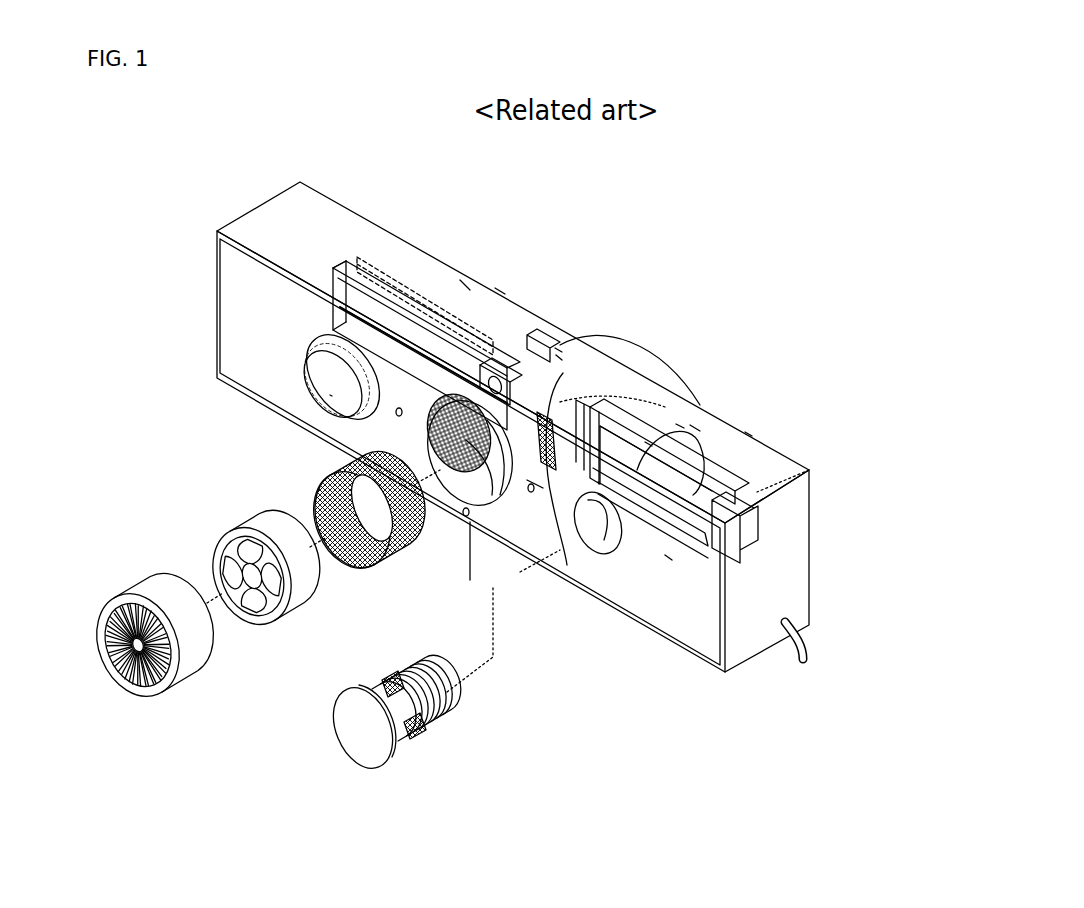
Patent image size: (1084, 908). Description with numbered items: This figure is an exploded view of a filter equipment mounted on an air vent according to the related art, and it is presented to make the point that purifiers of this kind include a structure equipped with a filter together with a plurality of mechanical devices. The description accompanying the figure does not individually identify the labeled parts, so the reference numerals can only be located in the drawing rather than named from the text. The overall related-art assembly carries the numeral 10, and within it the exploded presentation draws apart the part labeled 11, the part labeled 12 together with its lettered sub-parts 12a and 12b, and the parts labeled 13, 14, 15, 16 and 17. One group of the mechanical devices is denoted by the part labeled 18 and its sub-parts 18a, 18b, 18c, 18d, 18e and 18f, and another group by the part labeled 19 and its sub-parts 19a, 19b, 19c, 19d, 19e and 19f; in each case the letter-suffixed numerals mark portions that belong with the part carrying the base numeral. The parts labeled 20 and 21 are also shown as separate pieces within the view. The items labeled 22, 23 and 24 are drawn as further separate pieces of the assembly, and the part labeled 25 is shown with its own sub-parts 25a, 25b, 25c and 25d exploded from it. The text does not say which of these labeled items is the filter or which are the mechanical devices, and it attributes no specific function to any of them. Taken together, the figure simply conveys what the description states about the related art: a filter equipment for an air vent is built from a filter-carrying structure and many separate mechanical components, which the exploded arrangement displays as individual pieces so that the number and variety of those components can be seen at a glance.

The main body 10 is at (828, 519).
The fixing member 11 is at (560, 347).
The motor 12 is at (482, 495).
The motor front portion 12a is at (440, 497).
The motor coupling hole 12b is at (494, 590).
The outlet ring 13 is at (310, 418).
The cable 14 is at (594, 565).
The fastening portion 15 is at (452, 345).
The support member 16 is at (560, 352).
The coupling hole 17 is at (470, 580).
The bracket 18 is at (385, 266).
The bracket upper portion 18a is at (500, 292).
The bracket end portion 18b is at (342, 264).
The bracket block 18c is at (540, 306).
The bracket block top 18d is at (560, 300).
The bracket slot 18e is at (466, 285).
The bracket tab 18f is at (530, 284).
The housing frame 19 is at (795, 466).
The frame upper portion 19a is at (695, 421).
The frame rib 19b is at (680, 421).
The frame guide 19c is at (650, 440).
The frame side portion 19d is at (748, 432).
The frame lower portion 19e is at (668, 558).
The frame boss 19f is at (572, 570).
The wire 20 is at (600, 295).
The clip 21 is at (580, 360).
The filter 22 is at (318, 487).
The grille cover 23 is at (150, 700).
The fan 24 is at (270, 630).
The plug assembly 25 is at (331, 395).
The plug cap 25a is at (350, 744).
The plug flange 25b is at (306, 374).
The plug cylindrical body 25c is at (455, 708).
The plug locking protrusion 25d is at (392, 678).